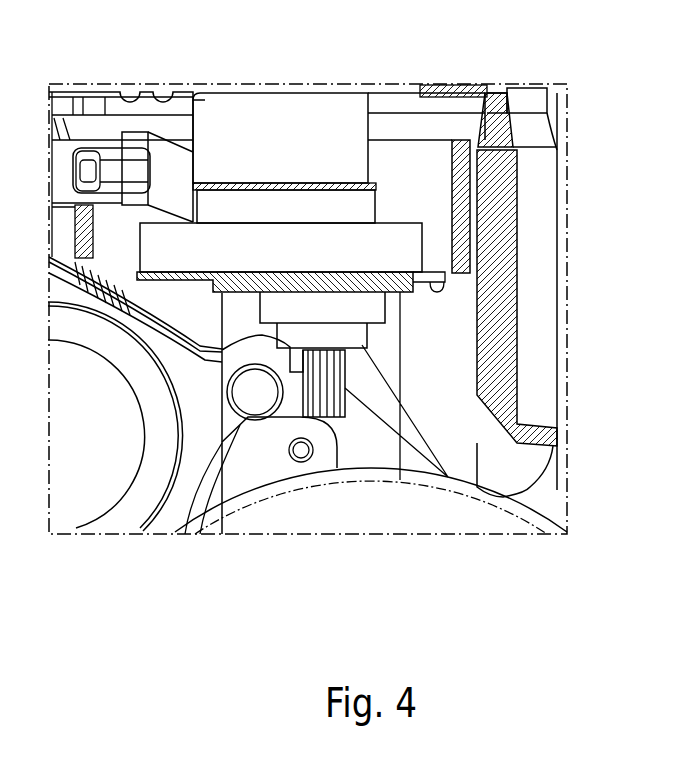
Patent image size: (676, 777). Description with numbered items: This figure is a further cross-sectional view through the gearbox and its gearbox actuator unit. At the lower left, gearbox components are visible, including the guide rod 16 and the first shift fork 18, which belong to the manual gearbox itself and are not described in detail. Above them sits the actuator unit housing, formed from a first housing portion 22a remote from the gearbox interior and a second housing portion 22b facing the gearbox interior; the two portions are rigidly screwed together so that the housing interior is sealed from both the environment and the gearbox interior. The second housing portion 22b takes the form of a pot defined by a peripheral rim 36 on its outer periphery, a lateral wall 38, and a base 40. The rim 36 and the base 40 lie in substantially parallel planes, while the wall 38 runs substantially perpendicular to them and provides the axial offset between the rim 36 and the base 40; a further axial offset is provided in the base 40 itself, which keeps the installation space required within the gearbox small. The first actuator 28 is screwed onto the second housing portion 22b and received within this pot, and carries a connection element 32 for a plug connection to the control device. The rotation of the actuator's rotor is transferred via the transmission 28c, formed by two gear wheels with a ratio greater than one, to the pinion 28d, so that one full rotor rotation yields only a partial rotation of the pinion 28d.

The guide rod 16 is at (257, 398).
The first shift fork 18 is at (187, 498).
The first housing portion 22a is at (505, 102).
The second housing portion 22b is at (505, 127).
The first actuator 28 is at (288, 134).
The transmission 28c is at (338, 313).
The pinion 28d is at (345, 388).
The connection element 32 is at (130, 170).
The peripheral rim 36 is at (512, 153).
The lateral wall 38 is at (470, 213).
The base 40 is at (222, 534).